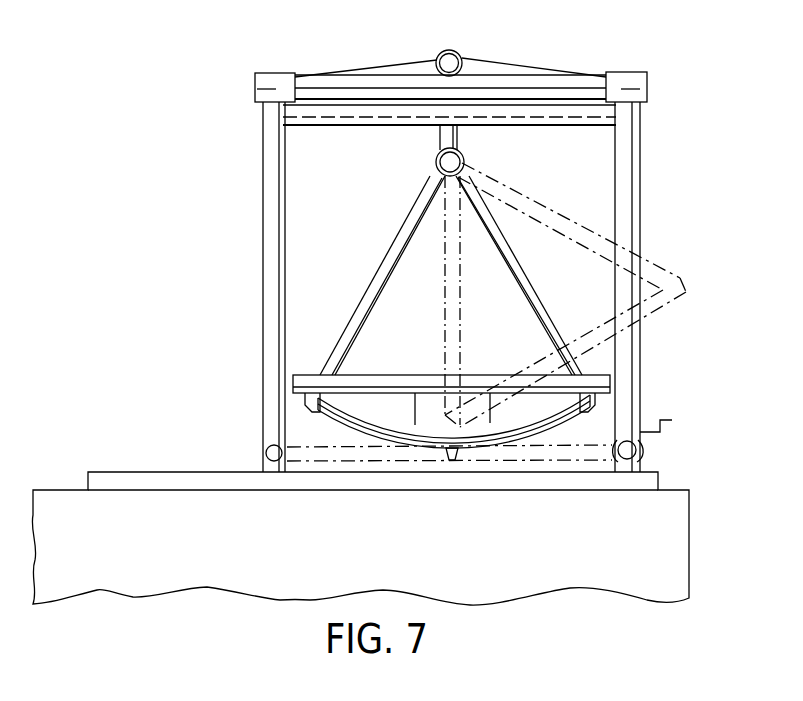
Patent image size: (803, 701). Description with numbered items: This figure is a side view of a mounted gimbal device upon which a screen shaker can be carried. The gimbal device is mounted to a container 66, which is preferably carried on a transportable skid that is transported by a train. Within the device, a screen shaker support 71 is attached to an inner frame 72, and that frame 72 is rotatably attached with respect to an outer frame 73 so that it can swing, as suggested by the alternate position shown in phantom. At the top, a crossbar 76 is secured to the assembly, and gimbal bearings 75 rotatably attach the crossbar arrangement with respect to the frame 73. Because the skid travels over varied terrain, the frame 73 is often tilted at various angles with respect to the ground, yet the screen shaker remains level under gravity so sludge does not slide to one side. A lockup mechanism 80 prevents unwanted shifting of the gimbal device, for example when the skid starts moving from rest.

The container 66 is at (482, 565).
The screen shaker support 71 is at (407, 375).
The frame 72 is at (395, 243).
The frame 73 is at (262, 265).
The gimbal bearings 75 is at (273, 77).
The crossbar 76 is at (463, 55).
The lockup mechanism 80 is at (318, 432).